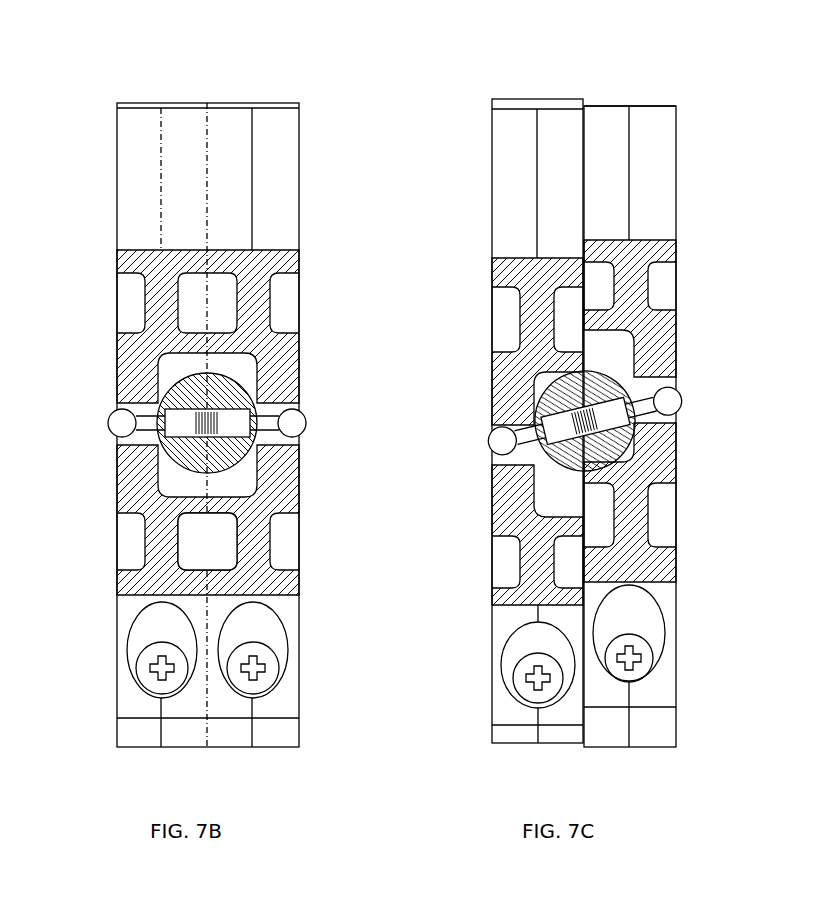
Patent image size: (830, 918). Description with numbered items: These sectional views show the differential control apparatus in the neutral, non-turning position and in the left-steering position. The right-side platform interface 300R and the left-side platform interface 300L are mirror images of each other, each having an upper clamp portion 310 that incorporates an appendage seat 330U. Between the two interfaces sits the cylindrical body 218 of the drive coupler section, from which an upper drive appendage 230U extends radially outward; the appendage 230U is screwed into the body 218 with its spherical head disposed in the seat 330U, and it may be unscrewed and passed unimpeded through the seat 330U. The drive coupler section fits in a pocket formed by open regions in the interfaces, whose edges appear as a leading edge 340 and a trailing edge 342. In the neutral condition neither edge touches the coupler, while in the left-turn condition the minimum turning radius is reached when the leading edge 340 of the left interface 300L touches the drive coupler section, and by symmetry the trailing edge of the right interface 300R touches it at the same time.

In FIG. 7B, the upper clamp portion 310 is at (117, 130).
In FIG. 7C, the upper clamp portion 310 is at (490, 133).
In FIG. 7B, the trailing edge 342 is at (200, 372).
In FIG. 7C, the trailing edge 342 is at (605, 365).
In FIG. 7B, the cylindrical body 218 is at (180, 465).
In FIG. 7B, the upper drive appendage 230U is at (305, 413).
In FIG. 7C, the upper drive appendage 230U is at (682, 393).
In FIG. 7B, the upper drive appendage seat 330U is at (300, 447).
In FIG. 7C, the upper drive appendage seat 330U is at (677, 427).
In FIG. 7B, the leading edge 340 is at (213, 490).
In FIG. 7C, the leading edge 340 is at (573, 475).
In FIG. 7C, the right-side platform interface 300R is at (530, 98).
In FIG. 7C, the left-side platform interface 300L is at (613, 103).